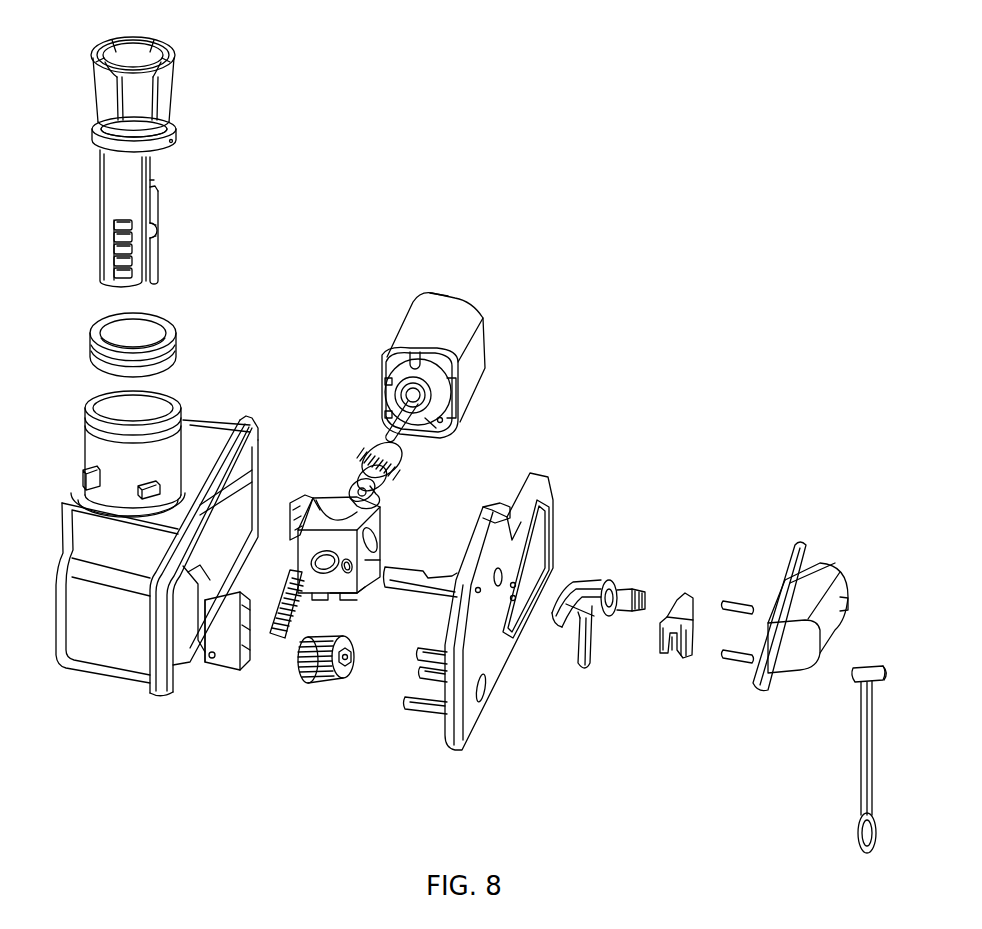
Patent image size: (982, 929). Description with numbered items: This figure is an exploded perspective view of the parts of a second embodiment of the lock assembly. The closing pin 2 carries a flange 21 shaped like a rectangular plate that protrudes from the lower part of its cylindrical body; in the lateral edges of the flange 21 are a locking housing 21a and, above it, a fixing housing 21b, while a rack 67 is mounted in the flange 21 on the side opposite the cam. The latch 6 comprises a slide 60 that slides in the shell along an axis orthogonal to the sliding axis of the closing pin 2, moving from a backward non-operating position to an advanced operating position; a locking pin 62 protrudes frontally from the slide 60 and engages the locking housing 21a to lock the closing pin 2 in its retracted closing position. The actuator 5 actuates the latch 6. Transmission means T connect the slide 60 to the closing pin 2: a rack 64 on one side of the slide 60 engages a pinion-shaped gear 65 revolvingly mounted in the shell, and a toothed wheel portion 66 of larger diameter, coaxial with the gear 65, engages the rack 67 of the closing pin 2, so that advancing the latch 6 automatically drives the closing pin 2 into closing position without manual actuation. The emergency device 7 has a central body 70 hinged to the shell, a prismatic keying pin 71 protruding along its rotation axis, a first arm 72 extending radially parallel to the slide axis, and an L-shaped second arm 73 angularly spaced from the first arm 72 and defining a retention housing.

The closing pin 2 is at (190, 119).
The flange 21 is at (115, 193).
The locking housing 21a is at (153, 230).
The fixing housing 21b is at (151, 187).
The rack 67 is at (100, 250).
The transmission means T is at (245, 680).
The actuator 5 is at (493, 352).
The latch 6 is at (382, 521).
The slide 60 is at (318, 515).
The locking pin 62 is at (348, 575).
The rack 64 is at (273, 634).
The gear 65 is at (313, 684).
The toothed wheel portion 66 is at (358, 628).
The emergency device 7 is at (580, 577).
The central body 70 is at (603, 590).
The keying pin 71 is at (643, 598).
The first arm 72 is at (553, 628).
The second arm 73 is at (593, 654).